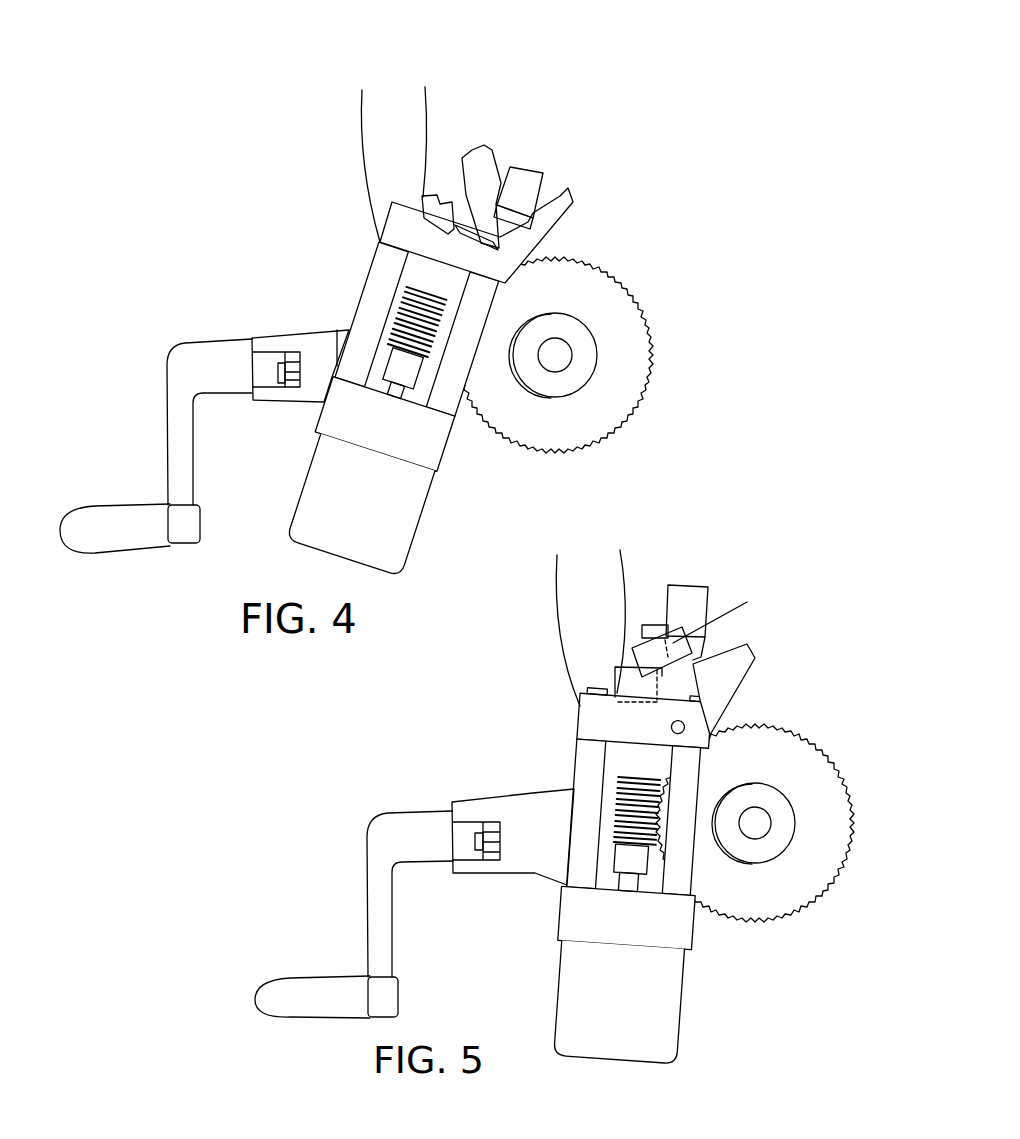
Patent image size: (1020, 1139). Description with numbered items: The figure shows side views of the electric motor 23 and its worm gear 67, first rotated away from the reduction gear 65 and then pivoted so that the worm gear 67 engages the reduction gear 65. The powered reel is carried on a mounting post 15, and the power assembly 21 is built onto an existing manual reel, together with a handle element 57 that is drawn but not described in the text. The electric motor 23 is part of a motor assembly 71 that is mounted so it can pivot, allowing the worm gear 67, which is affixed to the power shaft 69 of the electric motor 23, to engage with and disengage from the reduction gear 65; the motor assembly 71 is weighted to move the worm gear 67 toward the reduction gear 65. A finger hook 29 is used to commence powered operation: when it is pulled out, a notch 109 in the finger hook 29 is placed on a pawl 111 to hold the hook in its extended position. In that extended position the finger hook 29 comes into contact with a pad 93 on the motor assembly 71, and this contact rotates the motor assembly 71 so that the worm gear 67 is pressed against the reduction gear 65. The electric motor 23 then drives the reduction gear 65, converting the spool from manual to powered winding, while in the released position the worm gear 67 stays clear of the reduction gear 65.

In FIG. 4, the mounting post 15 is at (372, 132).
In FIG. 5, the mounting post 15 is at (575, 602).
In FIG. 4, the power assembly 21 is at (448, 397).
In FIG. 4, the electric motor 23 is at (320, 532).
In FIG. 5, the electric motor 23 is at (658, 995).
In FIG. 4, the finger hook 29 is at (488, 173).
In FIG. 5, the finger hook 29 is at (687, 603).
In FIG. 4, the crank handle knob 57 is at (137, 513).
In FIG. 5, the crank handle knob 57 is at (328, 987).
In FIG. 4, the reduction gear 65 is at (630, 308).
In FIG. 5, the reduction gear 65 is at (768, 912).
In FIG. 4, the worm gear 67 is at (412, 308).
In FIG. 5, the worm gear 67 is at (617, 793).
In FIG. 5, the power shaft 69 is at (613, 875).
In FIG. 4, the motor assembly 71 is at (375, 310).
In FIG. 5, the motor assembly 71 is at (680, 848).
In FIG. 4, the pad 93 is at (527, 183).
In FIG. 5, the notch 109 is at (642, 625).
In FIG. 4, the pawl 111 is at (440, 200).
In FIG. 5, the pawl 111 is at (628, 680).